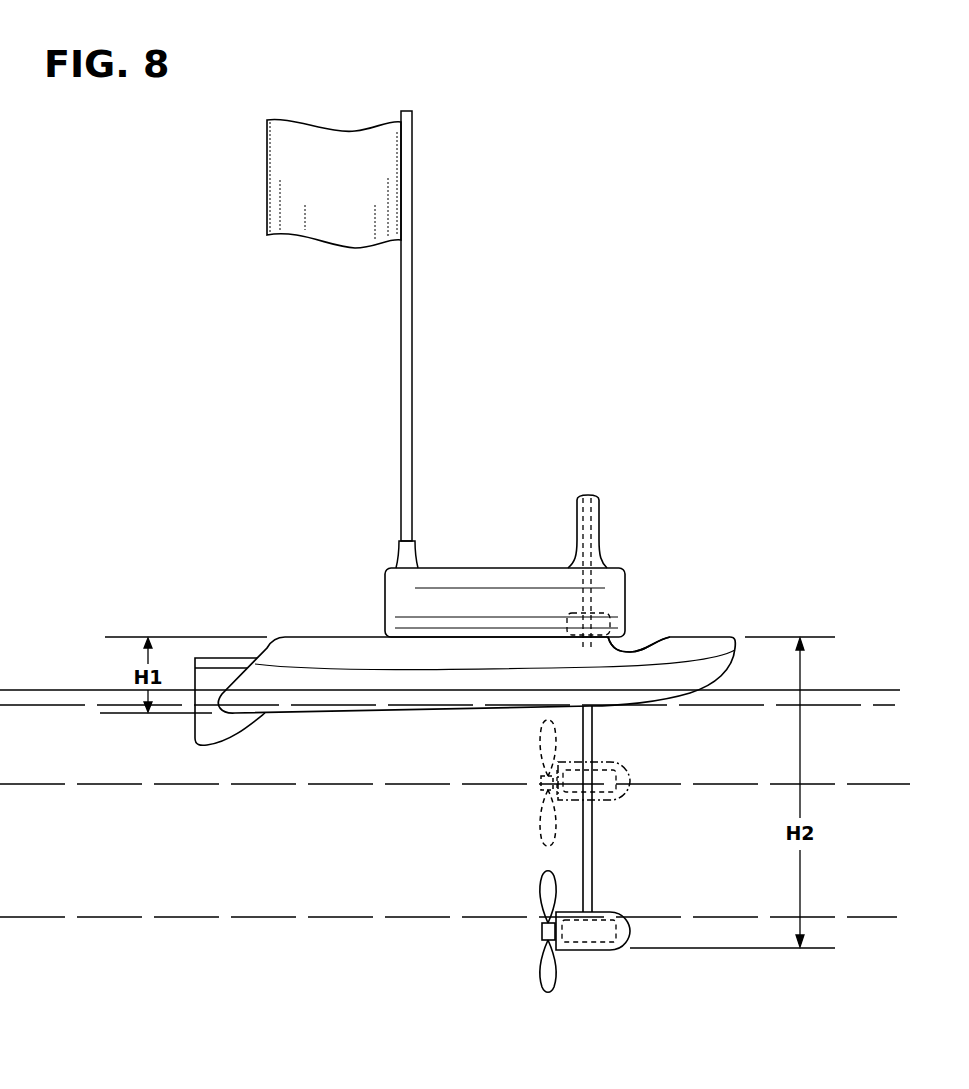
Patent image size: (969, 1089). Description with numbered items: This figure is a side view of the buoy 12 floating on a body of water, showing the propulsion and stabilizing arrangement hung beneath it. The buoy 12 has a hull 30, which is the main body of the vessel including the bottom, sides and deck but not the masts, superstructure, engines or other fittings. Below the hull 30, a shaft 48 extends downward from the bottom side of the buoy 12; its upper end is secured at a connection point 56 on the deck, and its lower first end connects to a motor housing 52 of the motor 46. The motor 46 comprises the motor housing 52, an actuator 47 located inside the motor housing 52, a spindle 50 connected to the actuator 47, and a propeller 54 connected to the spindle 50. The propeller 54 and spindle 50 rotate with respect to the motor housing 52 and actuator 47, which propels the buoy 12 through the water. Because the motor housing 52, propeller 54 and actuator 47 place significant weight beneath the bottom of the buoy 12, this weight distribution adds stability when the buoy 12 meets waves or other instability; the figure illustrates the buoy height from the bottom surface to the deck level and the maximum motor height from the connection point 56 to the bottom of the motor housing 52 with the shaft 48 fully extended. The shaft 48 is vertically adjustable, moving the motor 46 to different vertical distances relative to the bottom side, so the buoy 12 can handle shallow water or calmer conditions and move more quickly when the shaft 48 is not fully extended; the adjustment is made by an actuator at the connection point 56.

The buoy 12 is at (547, 363).
The hull 30 is at (182, 591).
The motor 46 is at (652, 645).
The actuator 47 is at (615, 762).
The shaft 48 is at (592, 725).
The spindle 50 is at (537, 783).
The motor housing 52 is at (632, 778).
The propeller 54 is at (547, 848).
The connection point 56 is at (612, 625).